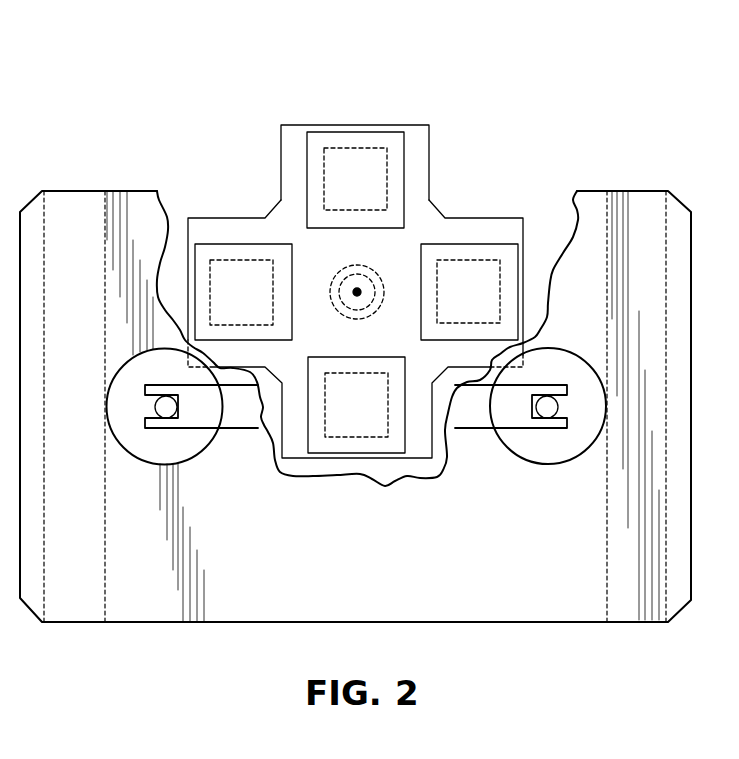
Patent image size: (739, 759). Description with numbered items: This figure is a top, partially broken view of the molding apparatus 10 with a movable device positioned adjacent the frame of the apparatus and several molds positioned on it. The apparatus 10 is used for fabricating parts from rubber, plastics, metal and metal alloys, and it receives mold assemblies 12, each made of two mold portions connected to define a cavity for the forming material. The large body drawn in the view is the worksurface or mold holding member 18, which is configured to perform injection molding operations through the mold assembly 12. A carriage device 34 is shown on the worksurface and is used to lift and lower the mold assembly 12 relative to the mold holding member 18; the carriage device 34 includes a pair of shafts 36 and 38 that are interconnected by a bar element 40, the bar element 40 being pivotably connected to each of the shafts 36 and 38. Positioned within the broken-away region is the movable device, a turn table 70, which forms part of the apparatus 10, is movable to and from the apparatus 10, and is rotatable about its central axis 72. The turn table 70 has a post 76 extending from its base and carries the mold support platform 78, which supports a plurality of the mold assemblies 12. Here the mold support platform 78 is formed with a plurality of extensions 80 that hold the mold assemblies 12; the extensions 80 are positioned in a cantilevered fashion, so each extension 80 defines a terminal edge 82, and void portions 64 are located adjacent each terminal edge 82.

The molding apparatus 10 is at (98, 99).
The mold assembly 12 is at (233, 255).
The mold holding member 18 is at (644, 213).
The carriage device 34 is at (223, 407).
The shaft 36 is at (162, 407).
The shaft 38 is at (552, 407).
The bar element 40 is at (480, 412).
The void portions 64 is at (370, 215).
The turn table 70 is at (432, 137).
The central axis 72 is at (360, 290).
The post 76 is at (330, 277).
The mold support platform 78 is at (292, 145).
The extensions 80 is at (188, 190).
The terminal edge 82 is at (340, 125).